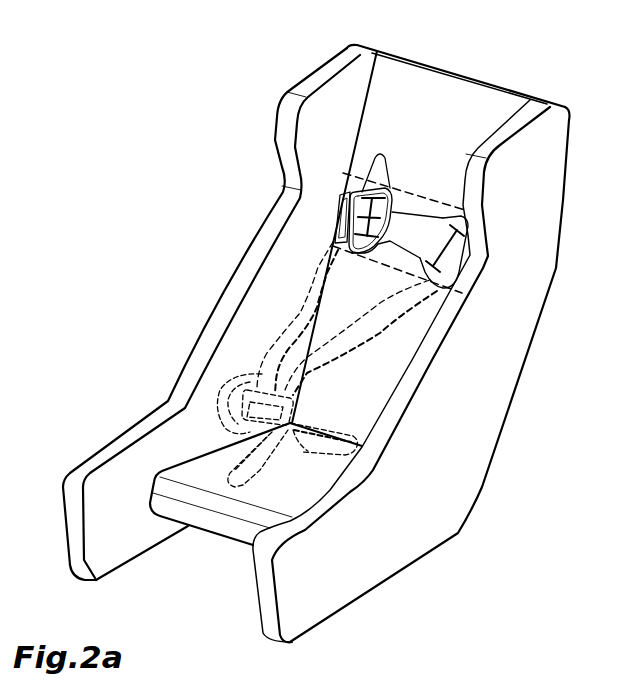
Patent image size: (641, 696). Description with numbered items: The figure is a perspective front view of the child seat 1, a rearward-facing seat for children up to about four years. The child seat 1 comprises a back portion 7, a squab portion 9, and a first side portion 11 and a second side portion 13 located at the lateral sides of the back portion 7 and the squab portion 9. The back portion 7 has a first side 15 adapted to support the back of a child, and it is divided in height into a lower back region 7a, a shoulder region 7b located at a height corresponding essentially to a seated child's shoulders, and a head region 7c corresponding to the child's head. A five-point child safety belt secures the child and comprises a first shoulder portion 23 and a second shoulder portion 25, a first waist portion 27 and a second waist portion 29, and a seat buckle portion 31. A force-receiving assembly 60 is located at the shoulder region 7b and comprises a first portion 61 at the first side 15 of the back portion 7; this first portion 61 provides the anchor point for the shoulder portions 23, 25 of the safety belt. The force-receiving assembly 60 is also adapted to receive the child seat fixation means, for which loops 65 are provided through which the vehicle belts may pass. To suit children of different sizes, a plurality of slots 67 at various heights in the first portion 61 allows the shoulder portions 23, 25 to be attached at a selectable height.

The child seat 1 is at (166, 116).
The back portion 7 is at (490, 79).
The lower back region 7a is at (344, 415).
The shoulder region 7b is at (425, 232).
The head region 7c is at (407, 93).
The squab portion 9 is at (197, 492).
The first side portion 11 is at (128, 528).
The second side portion 13 is at (453, 412).
The first side 15 is at (432, 134).
The first shoulder portion 23 is at (300, 306).
The second shoulder portion 25 is at (357, 318).
The first waist portion 27 is at (224, 430).
The second waist portion 29 is at (317, 448).
The seat buckle portion 31 is at (237, 477).
The force-receiving assembly 60 is at (411, 187).
The first portion 61 is at (428, 214).
The loops 65 is at (337, 213).
The slots 67 is at (351, 194).